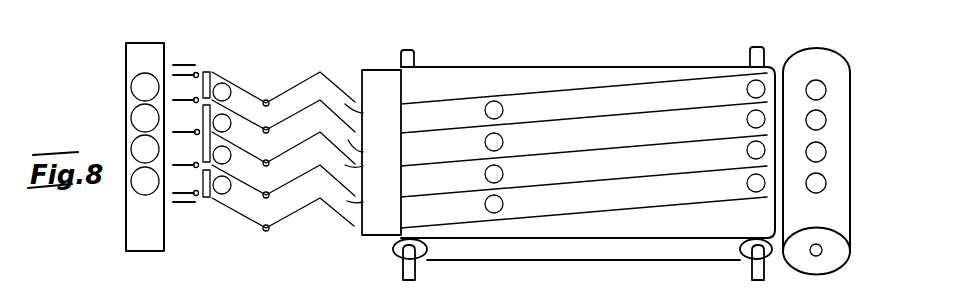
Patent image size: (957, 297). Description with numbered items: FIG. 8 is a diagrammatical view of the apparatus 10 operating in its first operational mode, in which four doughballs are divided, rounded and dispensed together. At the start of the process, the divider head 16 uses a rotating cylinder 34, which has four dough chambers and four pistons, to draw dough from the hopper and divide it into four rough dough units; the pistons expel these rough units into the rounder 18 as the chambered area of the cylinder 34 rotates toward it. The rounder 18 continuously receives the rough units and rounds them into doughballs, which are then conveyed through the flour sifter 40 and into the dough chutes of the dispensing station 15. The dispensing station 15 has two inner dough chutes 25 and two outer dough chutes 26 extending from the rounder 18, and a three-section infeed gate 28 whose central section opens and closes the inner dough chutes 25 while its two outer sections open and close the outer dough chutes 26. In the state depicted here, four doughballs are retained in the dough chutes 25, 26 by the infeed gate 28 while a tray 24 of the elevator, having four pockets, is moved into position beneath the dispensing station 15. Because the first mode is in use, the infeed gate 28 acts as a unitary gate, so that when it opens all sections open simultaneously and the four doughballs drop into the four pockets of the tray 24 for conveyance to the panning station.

The apparatus 10 is at (502, 57).
The dispensing station 15 is at (229, 65).
The divider head 16 is at (834, 139).
The rounder 18 is at (576, 58).
The tray 24 is at (155, 42).
The inner dough chutes 25 is at (362, 160).
The outer dough chutes 26 is at (371, 202).
The infeed gate 28 is at (185, 217).
The rotating cylinder 34 is at (840, 70).
The flour sifter 40 is at (380, 77).